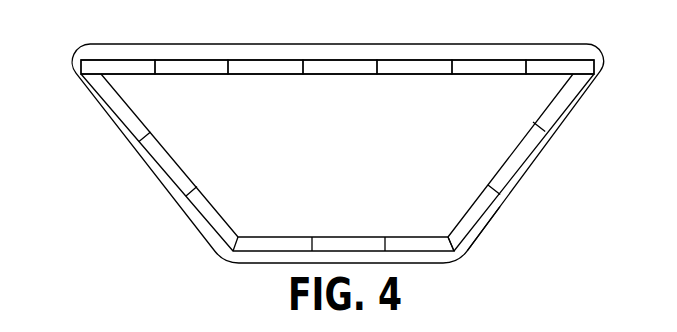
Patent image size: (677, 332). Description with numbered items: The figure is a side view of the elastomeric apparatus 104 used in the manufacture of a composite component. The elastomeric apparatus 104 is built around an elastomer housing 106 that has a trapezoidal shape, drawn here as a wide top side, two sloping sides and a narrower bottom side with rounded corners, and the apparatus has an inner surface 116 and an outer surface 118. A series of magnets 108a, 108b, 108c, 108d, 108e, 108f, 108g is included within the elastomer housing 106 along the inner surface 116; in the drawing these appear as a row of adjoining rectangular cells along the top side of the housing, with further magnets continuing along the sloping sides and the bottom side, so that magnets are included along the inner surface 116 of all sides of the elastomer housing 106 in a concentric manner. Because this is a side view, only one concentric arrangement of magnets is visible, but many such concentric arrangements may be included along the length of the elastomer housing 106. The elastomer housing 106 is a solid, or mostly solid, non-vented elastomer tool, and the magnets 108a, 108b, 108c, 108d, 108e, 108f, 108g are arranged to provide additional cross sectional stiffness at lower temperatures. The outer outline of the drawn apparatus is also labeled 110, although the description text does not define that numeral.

The elastomeric apparatus 104 is at (132, 183).
The elastomer housing 106 is at (538, 158).
The magnet 108a is at (140, 75).
The magnet 108b is at (214, 75).
The magnet 108c is at (268, 75).
The magnet 108d is at (345, 75).
The magnet 108e is at (422, 75).
The magnet 108f is at (485, 75).
The magnet 108g is at (544, 75).
The outer housing 110 is at (605, 67).
The inner surface 116 is at (312, 80).
The outer surface 118 is at (493, 220).